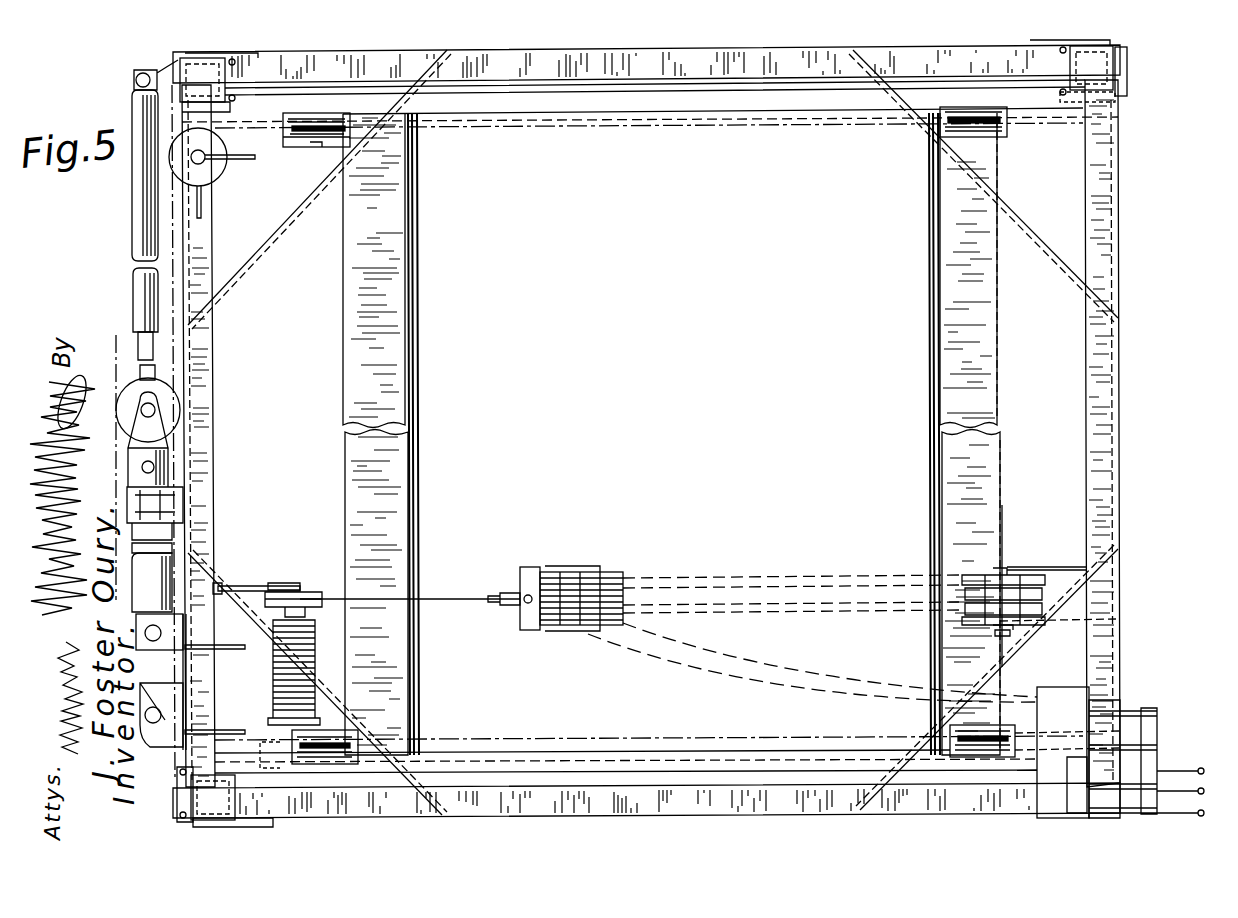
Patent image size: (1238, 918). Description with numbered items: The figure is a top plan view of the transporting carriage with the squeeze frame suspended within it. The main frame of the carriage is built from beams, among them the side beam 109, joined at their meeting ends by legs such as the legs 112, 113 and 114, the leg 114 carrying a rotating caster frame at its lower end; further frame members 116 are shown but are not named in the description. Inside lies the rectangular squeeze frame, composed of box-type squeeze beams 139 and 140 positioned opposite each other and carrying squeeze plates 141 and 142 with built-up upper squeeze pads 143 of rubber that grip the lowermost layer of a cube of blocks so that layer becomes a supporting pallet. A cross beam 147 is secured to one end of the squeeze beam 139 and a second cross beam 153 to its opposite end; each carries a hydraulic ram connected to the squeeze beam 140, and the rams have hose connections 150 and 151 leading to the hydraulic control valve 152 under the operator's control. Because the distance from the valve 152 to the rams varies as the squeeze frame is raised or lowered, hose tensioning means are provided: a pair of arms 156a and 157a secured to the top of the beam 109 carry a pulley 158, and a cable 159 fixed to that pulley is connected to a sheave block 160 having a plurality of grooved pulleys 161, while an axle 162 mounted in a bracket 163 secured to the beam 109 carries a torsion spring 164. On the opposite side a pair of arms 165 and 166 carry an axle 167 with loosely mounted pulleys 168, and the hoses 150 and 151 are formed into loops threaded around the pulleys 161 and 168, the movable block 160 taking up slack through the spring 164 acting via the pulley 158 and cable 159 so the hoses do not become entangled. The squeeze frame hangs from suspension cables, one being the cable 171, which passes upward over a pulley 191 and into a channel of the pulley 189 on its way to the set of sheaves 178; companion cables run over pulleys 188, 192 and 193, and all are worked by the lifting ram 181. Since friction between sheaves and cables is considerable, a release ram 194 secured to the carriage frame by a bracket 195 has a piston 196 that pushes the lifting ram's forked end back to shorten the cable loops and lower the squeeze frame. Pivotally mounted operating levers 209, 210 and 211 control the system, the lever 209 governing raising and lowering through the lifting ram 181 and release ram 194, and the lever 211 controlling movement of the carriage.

The beam 109 is at (206, 540).
The leg 112 is at (206, 794).
The leg 113 is at (219, 82).
The leg 114 is at (1078, 71).
The frame upright 116 is at (918, 748).
The squeeze beam 139 is at (940, 313).
The squeeze beam 140 is at (375, 271).
The squeeze plate 141 is at (410, 507).
The squeeze plate 142 is at (943, 482).
The upper squeeze pads 143 is at (930, 474).
The cross beam 147 is at (708, 752).
The hose 150 is at (794, 684).
The hose 151 is at (822, 672).
The hydraulic control valve 152 is at (1050, 687).
The second cross beam 153 is at (712, 108).
The arm 156a is at (220, 583).
The arm 157a is at (249, 607).
The pulley 158 is at (318, 592).
The cable 159 is at (425, 598).
The sheave block 160 is at (530, 576).
The grooved pulleys 161 is at (548, 632).
The axle 162 is at (292, 585).
The bracket 163 is at (272, 768).
The torsion spring 164 is at (318, 630).
The arm 165 is at (1020, 568).
The arm 166 is at (1000, 634).
The axle 167 is at (1002, 560).
The loosely mounted pulleys 168 is at (960, 612).
The cable 171 is at (152, 752).
The set of sheaves 178 is at (200, 716).
The hydraulic ram 181 is at (152, 582).
The pulley 188 is at (953, 125).
The pulley 189 is at (222, 173).
The pulley 191 is at (294, 137).
The pulley 192 is at (1000, 735).
The pulley 193 is at (315, 757).
The release ram 194 is at (130, 200).
The bracket 195 is at (178, 60).
The piston 196 is at (139, 349).
The operating lever 209 is at (1175, 812).
The operating lever 210 is at (1173, 770).
The operating lever 211 is at (1195, 768).